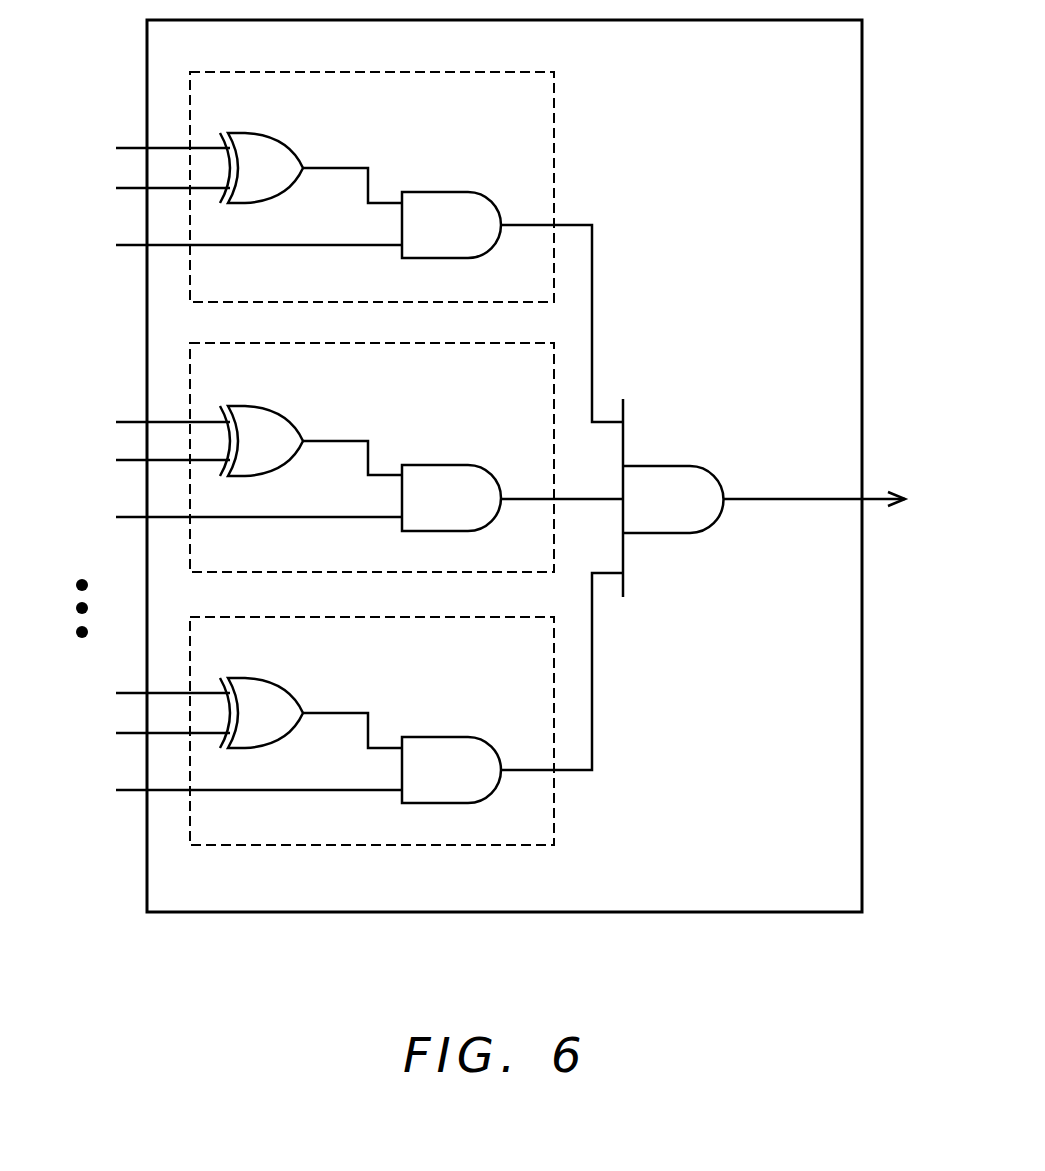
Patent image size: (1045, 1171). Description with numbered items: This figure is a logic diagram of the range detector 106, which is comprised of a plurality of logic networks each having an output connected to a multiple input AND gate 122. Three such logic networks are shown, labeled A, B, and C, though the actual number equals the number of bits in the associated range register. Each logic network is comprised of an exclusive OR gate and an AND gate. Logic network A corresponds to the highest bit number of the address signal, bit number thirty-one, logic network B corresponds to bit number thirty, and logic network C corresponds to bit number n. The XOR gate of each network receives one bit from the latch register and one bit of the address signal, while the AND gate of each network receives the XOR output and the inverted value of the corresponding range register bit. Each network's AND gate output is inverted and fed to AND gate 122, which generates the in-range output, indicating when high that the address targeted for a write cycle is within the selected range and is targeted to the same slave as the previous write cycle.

The range detector 106 is at (147, 63).
The multiple input AND gate 122 is at (656, 465).
The logic network A is at (336, 247).
The logic network B is at (336, 457).
The logic network C is at (340, 709).